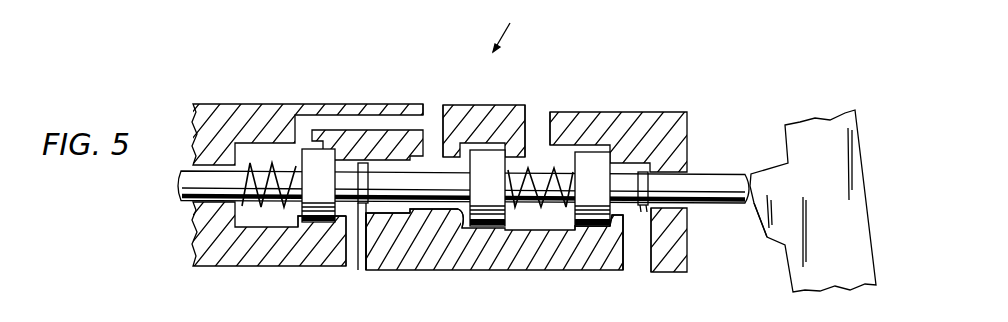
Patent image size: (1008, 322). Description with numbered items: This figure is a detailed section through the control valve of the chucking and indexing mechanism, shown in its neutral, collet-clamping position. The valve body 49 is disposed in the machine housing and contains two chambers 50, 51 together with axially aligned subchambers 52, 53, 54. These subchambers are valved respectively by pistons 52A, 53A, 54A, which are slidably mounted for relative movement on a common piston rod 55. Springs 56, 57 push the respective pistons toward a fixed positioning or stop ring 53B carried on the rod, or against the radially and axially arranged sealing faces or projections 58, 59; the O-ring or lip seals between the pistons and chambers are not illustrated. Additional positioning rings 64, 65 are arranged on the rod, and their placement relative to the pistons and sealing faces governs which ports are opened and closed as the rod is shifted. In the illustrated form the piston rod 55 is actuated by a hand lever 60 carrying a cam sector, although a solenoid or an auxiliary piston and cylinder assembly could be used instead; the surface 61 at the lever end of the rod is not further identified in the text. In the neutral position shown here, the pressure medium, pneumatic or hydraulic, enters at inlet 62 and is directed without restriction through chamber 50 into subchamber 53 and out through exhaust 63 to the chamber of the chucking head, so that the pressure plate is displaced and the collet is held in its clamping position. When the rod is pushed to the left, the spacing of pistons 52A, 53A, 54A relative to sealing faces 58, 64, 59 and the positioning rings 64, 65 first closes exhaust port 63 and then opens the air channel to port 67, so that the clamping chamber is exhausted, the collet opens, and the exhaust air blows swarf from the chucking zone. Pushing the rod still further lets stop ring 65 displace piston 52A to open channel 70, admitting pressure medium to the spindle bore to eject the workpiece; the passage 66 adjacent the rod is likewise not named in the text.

The valve body 49 is at (515, 29).
The chamber 50 is at (560, 235).
The chamber 51 is at (247, 256).
The subchamber 52 is at (624, 228).
The piston 52A is at (590, 162).
The subchamber 53 is at (410, 214).
The piston 53A is at (487, 160).
The stop ring 53B is at (432, 208).
The subchamber 54 is at (363, 163).
The piston 54A is at (311, 155).
The piston rod 55 is at (715, 183).
The spring 56 is at (536, 165).
The spring 57 is at (241, 170).
The sealing face 58 is at (590, 238).
The sealing face 59 is at (303, 216).
The hand lever 60 is at (852, 140).
The notch surface 61 is at (762, 227).
The inlet 62 is at (536, 112).
The exhaust 63 is at (437, 112).
The positioning ring 64 is at (460, 222).
The stop ring 65 is at (641, 208).
The channel 66 is at (362, 235).
The port 67 is at (355, 262).
The channel 70 is at (635, 268).